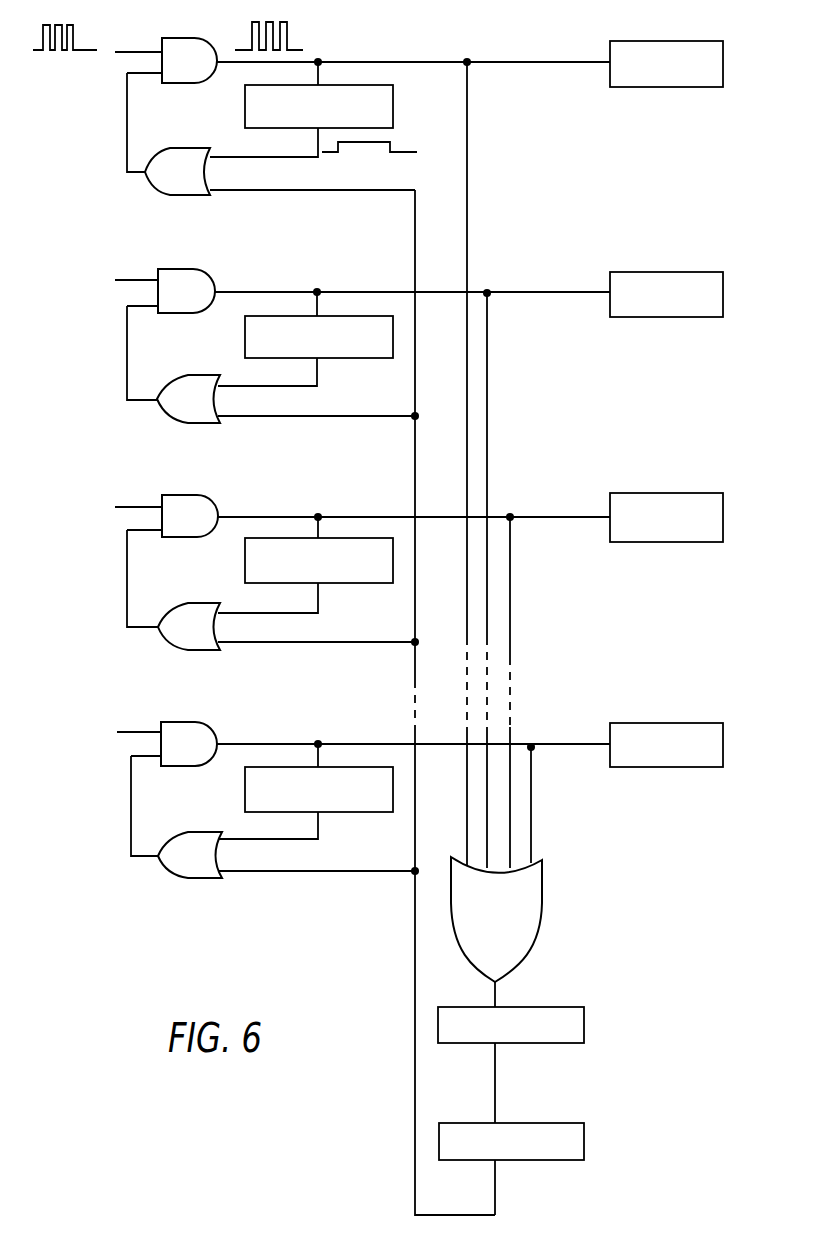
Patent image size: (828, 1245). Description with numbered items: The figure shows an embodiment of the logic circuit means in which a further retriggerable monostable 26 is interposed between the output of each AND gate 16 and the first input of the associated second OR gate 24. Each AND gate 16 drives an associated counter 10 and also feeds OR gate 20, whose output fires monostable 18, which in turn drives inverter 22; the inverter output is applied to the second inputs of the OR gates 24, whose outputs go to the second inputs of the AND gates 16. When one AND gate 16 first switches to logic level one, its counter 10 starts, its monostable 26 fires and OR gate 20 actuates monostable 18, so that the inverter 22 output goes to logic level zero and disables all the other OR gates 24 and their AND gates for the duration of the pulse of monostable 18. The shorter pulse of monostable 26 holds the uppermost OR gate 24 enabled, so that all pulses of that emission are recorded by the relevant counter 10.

The counter 10 is at (666, 88).
The AND gate 16 is at (200, 78).
The monostable 18 is at (584, 1021).
The OR gate 20 is at (496, 919).
The inverter 22 is at (584, 1143).
The second OR gate 24 is at (163, 180).
The retriggerable monostable 26 is at (393, 103).